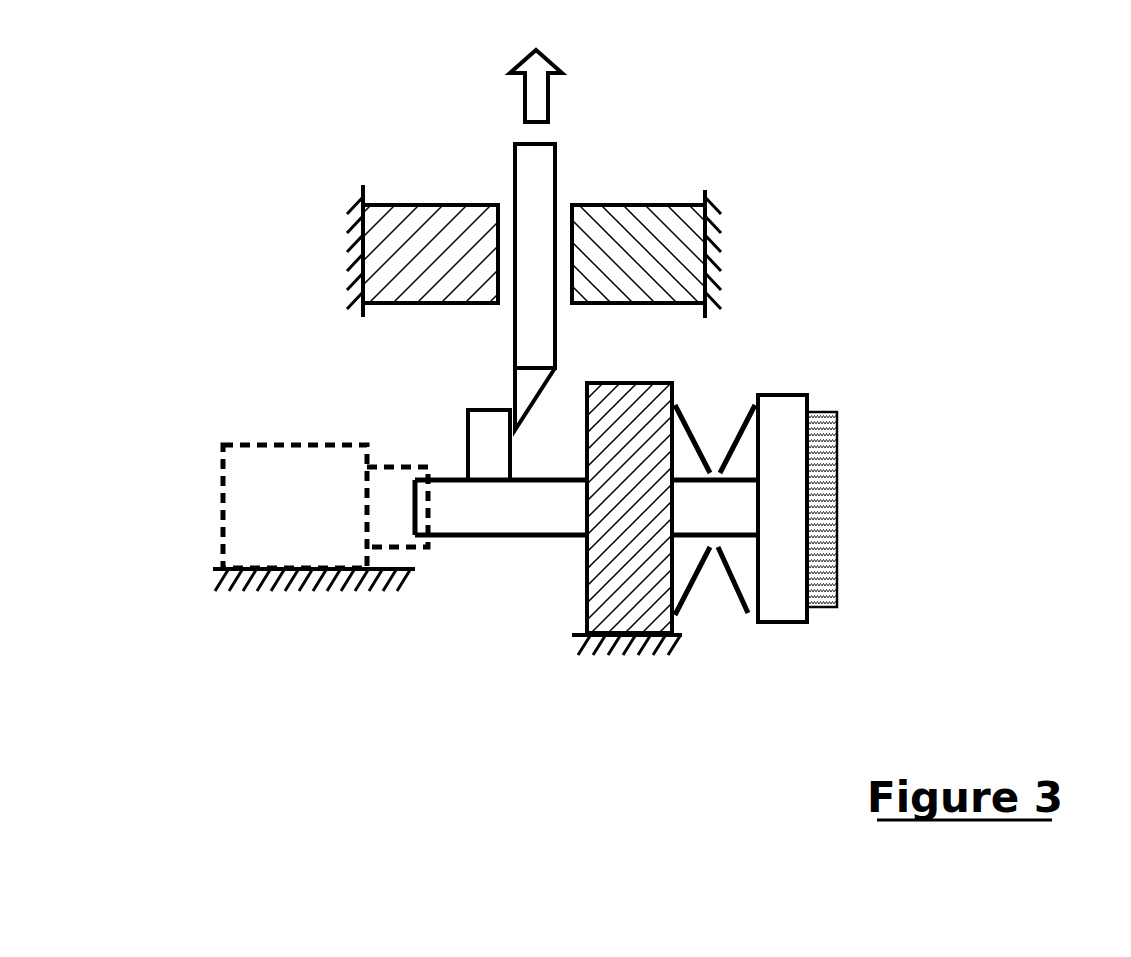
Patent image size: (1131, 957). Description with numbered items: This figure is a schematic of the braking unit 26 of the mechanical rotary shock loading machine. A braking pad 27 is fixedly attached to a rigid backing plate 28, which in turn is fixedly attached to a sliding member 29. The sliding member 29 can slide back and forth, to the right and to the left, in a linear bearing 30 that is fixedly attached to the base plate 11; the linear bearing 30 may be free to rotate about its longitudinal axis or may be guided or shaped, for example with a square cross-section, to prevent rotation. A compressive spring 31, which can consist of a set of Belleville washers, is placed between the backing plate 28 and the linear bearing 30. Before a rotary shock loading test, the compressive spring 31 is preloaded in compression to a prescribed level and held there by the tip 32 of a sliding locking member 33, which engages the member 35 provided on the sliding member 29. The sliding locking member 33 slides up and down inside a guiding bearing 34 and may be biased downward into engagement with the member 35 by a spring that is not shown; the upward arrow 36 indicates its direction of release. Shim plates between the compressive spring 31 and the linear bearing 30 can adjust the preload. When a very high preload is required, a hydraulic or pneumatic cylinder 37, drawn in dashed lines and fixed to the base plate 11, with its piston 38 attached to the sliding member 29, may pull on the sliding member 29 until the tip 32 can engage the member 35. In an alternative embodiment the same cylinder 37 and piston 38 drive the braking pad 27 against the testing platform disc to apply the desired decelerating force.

The base plate 11 is at (345, 253).
The braking unit 26 is at (977, 152).
The braking pad 27 is at (817, 437).
The rigid backing plate 28 is at (786, 597).
The sliding member 29 is at (528, 512).
The linear bearing 30 is at (627, 605).
The compressive spring 31 is at (697, 593).
The tip 32 is at (523, 393).
The sliding locking member 33 is at (528, 180).
The guiding bearing 34 is at (633, 228).
The member 35 is at (488, 445).
The direction of actuation 36 is at (535, 90).
The hydraulic cylinder 37 is at (273, 499).
The piston 38 is at (388, 515).